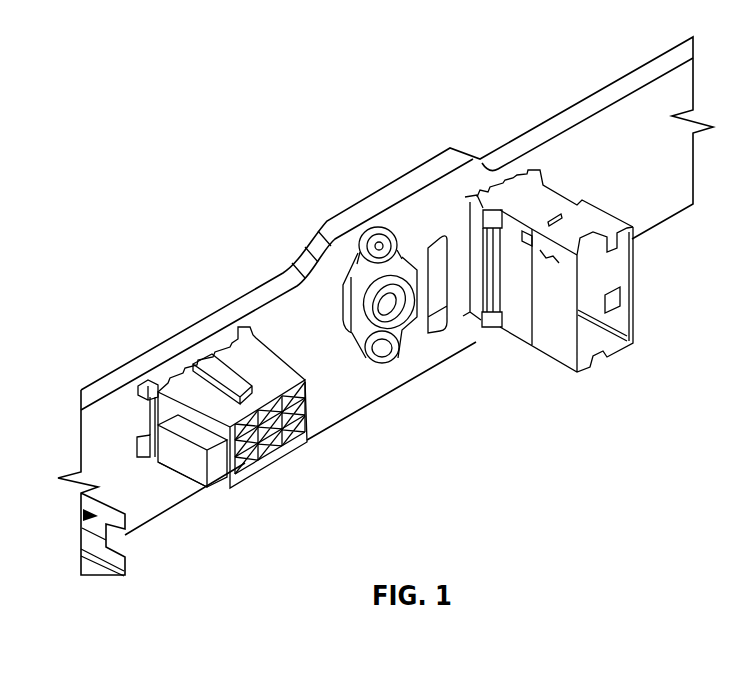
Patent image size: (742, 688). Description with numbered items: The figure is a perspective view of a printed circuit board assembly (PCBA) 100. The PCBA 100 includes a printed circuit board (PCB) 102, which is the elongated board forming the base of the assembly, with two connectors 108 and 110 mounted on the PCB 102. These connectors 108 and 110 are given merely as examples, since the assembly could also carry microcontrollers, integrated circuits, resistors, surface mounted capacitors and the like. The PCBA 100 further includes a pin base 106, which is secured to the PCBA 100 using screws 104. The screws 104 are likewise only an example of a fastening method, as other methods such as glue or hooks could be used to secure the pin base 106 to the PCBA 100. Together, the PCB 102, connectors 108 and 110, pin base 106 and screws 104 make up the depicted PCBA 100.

The printed circuit board assembly 100 is at (132, 174).
The printed circuit board 102 is at (328, 417).
The screws 104 is at (378, 236).
The pin base 106 is at (358, 277).
The connector 108 is at (558, 340).
The connector 110 is at (190, 466).